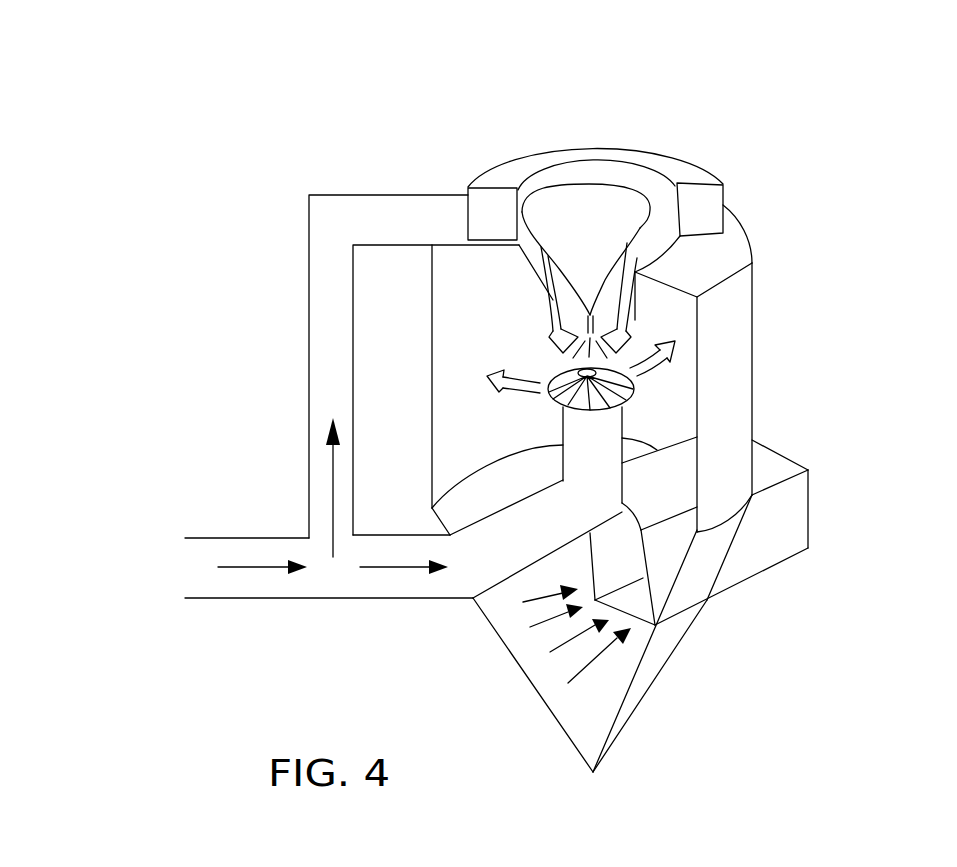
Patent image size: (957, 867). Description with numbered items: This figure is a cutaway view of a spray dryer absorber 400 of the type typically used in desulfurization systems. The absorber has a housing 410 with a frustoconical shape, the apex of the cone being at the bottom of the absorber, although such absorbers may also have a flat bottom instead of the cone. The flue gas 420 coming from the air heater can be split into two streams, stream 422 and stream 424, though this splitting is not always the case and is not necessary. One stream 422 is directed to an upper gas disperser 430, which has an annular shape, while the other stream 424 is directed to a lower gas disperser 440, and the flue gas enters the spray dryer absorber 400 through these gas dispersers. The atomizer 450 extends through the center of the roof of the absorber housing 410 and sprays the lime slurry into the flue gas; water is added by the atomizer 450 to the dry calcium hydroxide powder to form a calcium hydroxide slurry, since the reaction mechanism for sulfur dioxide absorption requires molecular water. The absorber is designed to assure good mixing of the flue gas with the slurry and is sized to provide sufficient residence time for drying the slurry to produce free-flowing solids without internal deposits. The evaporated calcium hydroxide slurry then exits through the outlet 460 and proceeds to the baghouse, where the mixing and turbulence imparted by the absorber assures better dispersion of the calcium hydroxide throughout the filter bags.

The spray dryer absorber 400 is at (299, 54).
The housing 410 is at (778, 300).
The flue gas 420 is at (257, 567).
The stream 422 is at (333, 482).
The stream 424 is at (380, 570).
The upper gas disperser 430 is at (508, 188).
The lower gas disperser 440 is at (613, 428).
The atomizer 450 is at (590, 242).
The outlet 460 is at (768, 535).